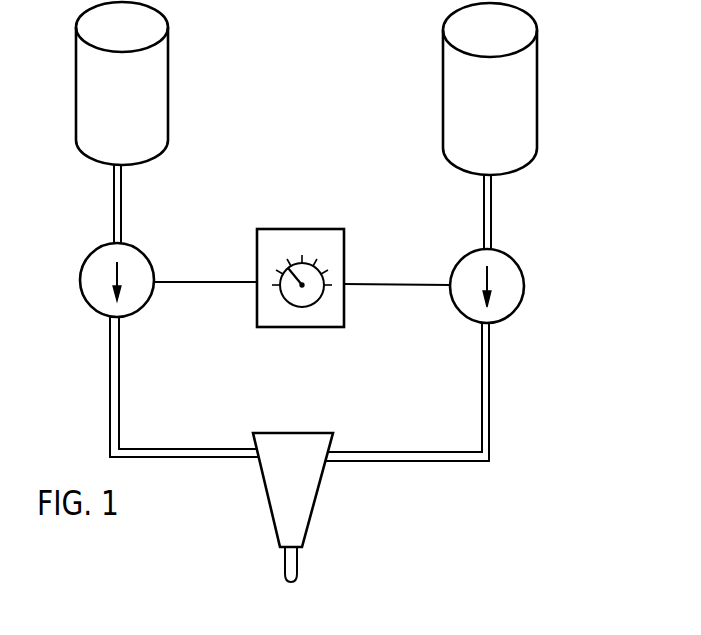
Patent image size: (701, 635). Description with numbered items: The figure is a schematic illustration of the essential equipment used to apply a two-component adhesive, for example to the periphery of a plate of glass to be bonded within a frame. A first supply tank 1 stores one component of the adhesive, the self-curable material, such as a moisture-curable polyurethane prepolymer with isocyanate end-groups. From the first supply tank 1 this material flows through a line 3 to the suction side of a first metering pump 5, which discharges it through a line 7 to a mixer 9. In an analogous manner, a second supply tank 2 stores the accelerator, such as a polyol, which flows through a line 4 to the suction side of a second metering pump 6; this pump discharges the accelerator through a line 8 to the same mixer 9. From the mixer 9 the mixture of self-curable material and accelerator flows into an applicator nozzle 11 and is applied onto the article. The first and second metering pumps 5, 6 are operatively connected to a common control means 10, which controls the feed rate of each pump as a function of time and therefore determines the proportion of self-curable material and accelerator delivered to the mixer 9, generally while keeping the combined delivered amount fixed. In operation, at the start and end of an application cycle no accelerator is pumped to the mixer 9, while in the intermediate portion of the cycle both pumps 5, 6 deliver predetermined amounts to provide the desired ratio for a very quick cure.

The first supply tank 1 is at (153, 63).
The second supply tank 2 is at (520, 77).
The line 3 is at (122, 205).
The line 4 is at (492, 213).
The first metering pump 5 is at (93, 278).
The second metering pump 6 is at (506, 284).
The line 7 is at (108, 389).
The line 8 is at (490, 382).
The mixer 9 is at (302, 488).
The common control means 10 is at (306, 243).
The applicator nozzle 11 is at (294, 567).